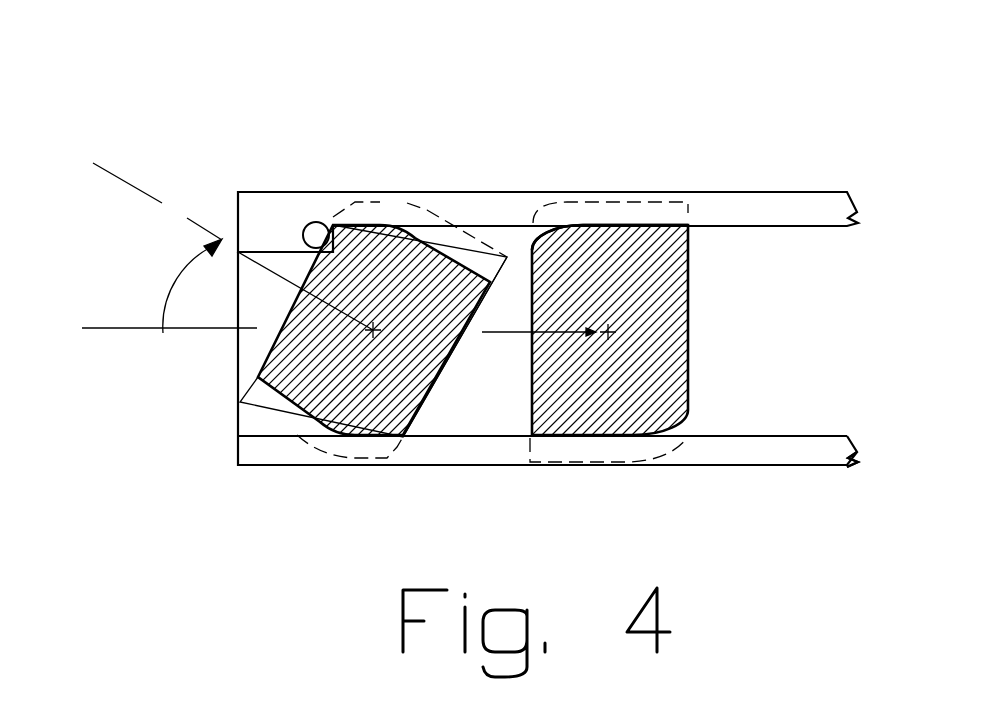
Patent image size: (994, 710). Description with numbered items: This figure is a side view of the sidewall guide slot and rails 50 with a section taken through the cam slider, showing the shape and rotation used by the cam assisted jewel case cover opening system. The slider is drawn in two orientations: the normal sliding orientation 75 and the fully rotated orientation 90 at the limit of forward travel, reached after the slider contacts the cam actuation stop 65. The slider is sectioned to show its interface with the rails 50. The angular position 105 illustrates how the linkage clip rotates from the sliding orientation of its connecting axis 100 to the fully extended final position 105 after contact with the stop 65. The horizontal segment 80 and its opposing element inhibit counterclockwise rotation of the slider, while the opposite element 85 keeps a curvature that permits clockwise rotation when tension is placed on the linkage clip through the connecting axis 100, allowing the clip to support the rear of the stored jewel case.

The rails 50 is at (727, 435).
The cam actuation stop 65 is at (315, 234).
The normal sliding orientation 75 is at (629, 277).
The horizontal segment 80 is at (656, 225).
The opposite element 85 is at (551, 239).
The fully rotated orientation 90 is at (402, 288).
The connecting axis 100 is at (500, 343).
The angular position 105 is at (166, 248).